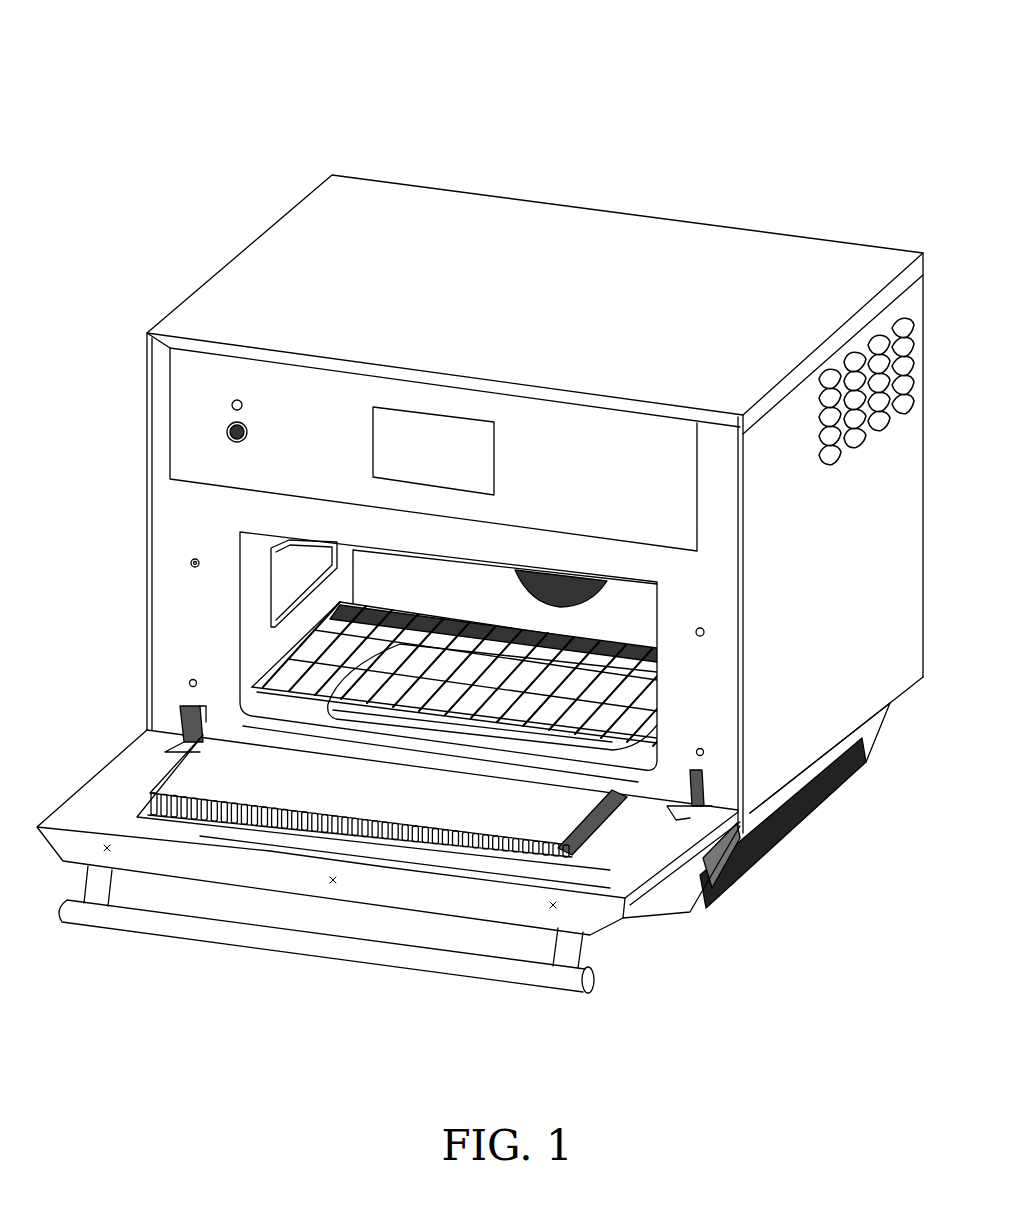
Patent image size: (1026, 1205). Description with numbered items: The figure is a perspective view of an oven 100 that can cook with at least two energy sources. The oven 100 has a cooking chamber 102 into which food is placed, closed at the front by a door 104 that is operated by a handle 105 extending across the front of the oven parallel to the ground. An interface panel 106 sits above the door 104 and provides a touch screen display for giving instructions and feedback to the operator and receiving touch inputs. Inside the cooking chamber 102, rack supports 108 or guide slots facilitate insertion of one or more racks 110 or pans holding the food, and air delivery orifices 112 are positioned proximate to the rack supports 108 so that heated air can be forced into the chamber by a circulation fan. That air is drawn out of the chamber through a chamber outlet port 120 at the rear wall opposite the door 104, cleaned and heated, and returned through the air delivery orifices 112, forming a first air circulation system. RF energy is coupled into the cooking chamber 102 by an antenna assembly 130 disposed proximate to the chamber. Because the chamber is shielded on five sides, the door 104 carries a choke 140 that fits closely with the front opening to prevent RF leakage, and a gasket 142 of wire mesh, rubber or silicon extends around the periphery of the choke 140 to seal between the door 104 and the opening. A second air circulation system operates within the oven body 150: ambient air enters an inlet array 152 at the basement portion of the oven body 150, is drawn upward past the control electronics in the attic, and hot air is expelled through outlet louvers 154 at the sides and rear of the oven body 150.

The oven 100 is at (467, 533).
The cooking chamber 102 is at (419, 634).
The door 104 is at (386, 895).
The handle 105 is at (332, 952).
The interface panel 106 is at (450, 436).
The rack supports 108 is at (275, 645).
The rack 110 is at (604, 727).
The air delivery orifices 112 is at (636, 648).
The chamber outlet port 120 is at (563, 592).
The antenna assembly 130 is at (272, 578).
The choke 140 is at (540, 847).
The gasket 142 is at (137, 815).
The oven body 150 is at (361, 449).
The inlet array 152 is at (763, 852).
The outlet louvers 154 is at (886, 350).